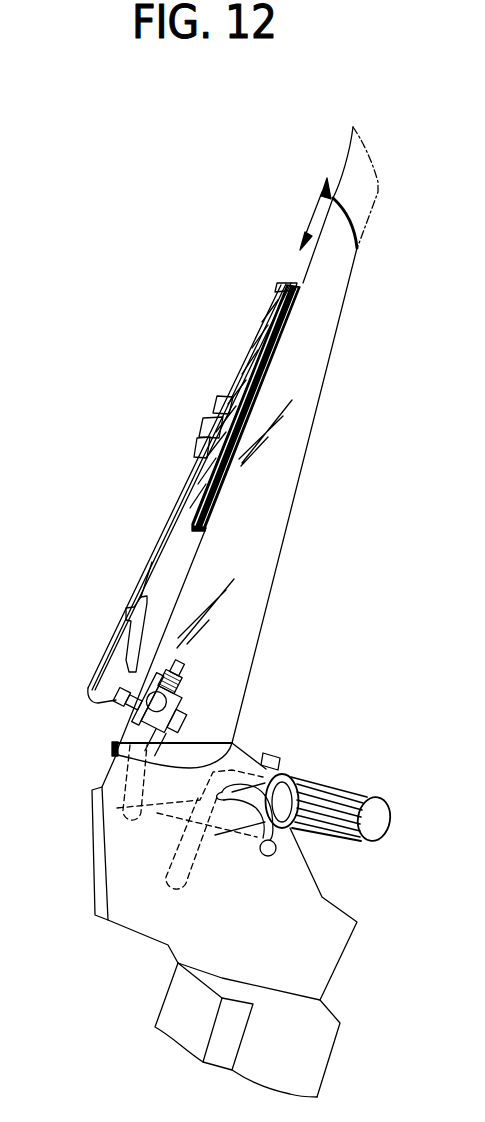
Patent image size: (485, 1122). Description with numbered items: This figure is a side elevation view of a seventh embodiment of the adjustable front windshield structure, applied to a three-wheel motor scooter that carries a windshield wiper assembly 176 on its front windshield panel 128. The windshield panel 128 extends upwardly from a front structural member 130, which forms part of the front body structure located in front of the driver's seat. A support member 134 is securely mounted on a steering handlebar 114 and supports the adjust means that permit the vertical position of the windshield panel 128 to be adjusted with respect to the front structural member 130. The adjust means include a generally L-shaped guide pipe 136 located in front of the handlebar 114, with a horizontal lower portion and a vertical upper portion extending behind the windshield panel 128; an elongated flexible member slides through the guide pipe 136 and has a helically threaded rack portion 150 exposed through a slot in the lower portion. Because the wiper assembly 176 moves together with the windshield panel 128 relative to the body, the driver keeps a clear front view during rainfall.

The steering handlebar 114 is at (352, 837).
The front windshield panel 128 is at (297, 495).
The front structural member 130 is at (133, 935).
The support member 134 is at (157, 814).
The guide pipe 136 is at (115, 756).
The helically threaded rack portion 150 is at (187, 667).
The windshield wiper assembly 176 is at (166, 492).